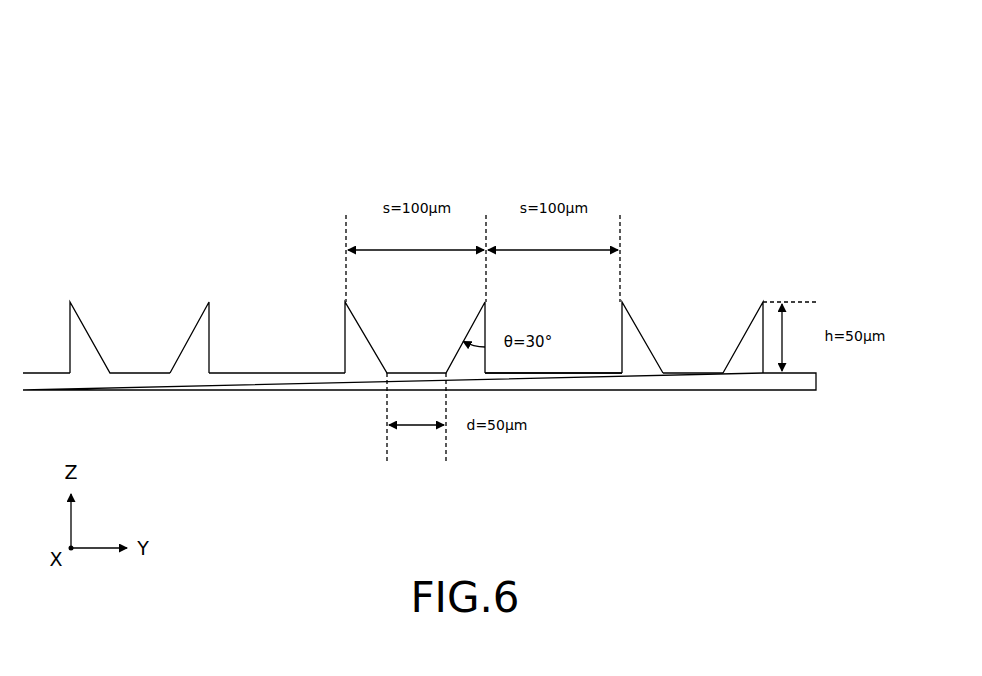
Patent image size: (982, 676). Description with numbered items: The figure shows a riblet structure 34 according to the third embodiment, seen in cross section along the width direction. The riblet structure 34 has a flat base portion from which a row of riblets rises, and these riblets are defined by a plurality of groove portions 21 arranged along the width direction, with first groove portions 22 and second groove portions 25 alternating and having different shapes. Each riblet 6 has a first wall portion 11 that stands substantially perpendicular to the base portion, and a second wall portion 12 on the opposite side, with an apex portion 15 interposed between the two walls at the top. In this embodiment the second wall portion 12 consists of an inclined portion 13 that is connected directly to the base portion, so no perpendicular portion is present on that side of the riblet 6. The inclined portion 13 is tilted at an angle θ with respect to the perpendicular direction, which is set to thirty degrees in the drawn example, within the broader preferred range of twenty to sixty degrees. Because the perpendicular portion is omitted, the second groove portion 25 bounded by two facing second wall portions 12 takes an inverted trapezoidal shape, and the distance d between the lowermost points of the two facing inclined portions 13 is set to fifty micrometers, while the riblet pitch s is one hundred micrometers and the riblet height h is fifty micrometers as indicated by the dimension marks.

The riblet structure 34 is at (473, 99).
The groove portions 21 is at (181, 272).
The second groove portion 25 is at (130, 325).
The first groove portion 22 is at (231, 301).
The riblet 6 is at (352, 309).
The first wall portion 11 is at (622, 349).
The inclined portion 13 is at (648, 340).
The second wall portion 12 is at (655, 357).
The apex portion 15 is at (763, 300).